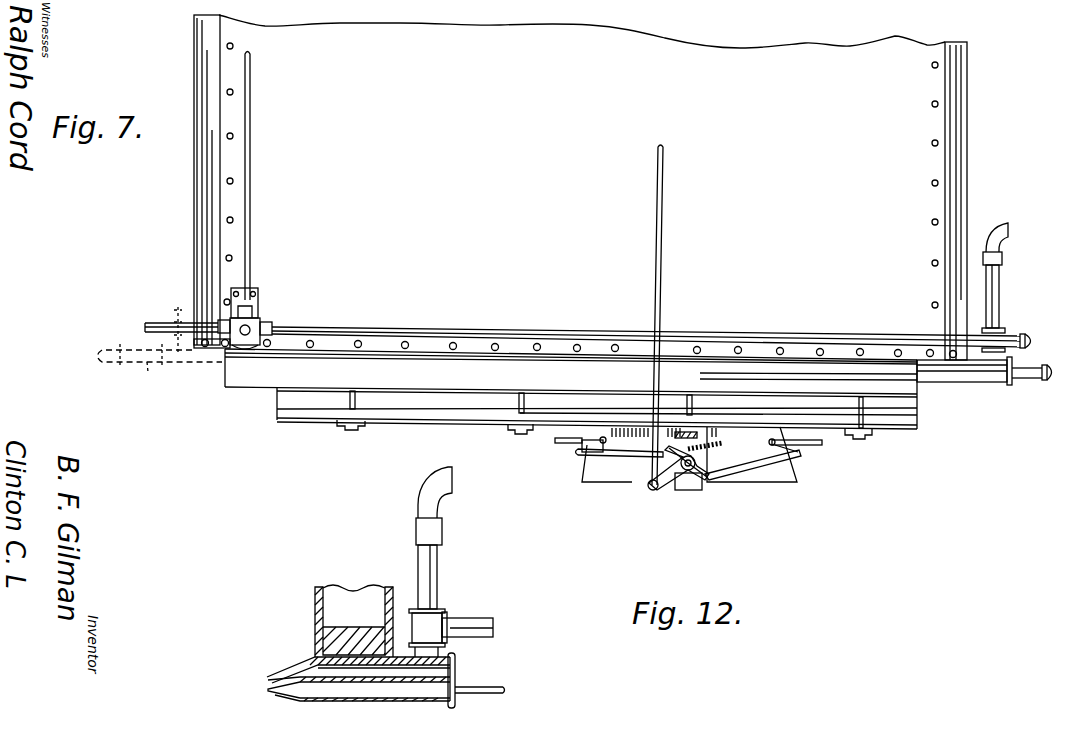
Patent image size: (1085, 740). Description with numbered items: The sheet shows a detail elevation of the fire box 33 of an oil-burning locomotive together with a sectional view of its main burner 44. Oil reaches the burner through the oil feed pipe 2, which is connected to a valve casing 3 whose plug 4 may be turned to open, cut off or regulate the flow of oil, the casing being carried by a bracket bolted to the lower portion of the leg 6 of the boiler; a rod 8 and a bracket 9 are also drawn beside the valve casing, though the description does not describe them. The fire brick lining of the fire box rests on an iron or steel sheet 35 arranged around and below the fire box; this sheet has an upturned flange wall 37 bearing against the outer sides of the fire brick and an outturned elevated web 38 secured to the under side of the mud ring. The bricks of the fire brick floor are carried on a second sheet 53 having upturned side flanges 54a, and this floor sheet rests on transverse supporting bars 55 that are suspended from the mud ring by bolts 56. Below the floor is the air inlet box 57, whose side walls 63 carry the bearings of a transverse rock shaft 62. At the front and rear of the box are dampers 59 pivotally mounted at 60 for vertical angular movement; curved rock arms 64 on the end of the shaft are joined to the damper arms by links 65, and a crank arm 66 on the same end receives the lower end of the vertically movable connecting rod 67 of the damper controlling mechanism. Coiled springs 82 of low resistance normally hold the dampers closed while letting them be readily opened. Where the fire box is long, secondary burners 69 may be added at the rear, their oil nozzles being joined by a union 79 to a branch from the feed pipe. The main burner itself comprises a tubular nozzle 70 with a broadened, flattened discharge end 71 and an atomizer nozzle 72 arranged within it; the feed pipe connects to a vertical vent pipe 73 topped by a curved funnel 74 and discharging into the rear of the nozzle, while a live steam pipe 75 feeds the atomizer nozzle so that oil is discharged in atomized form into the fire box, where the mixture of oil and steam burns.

In FIG. 7, the oil feed pipe 2 is at (158, 323).
In FIG. 12, the oil feed pipe 2 is at (486, 625).
In FIG. 7, the valve casing 3 is at (238, 342).
In FIG. 7, the plug 4 is at (264, 320).
In FIG. 7, the leg of the locomotive boiler 6 is at (249, 180).
In FIG. 7, the rod 8 is at (252, 118).
In FIG. 7, the bracket 9 is at (258, 302).
In FIG. 7, the fire box 33 is at (925, 127).
In FIG. 7, the sheet 35 is at (468, 390).
In FIG. 7, the upturned flange wall 37 is at (920, 395).
In FIG. 7, the outturned elevated portion or web 38 is at (548, 356).
In FIG. 7, the main burner 44 is at (975, 385).
In FIG. 7, the sheet 53 is at (312, 422).
In FIG. 7, the upturned side flanges 54a is at (416, 421).
In FIG. 7, the supporting bars 55 is at (508, 432).
In FIG. 7, the bolts 56 is at (357, 405).
In FIG. 7, the air inlet box 57 is at (588, 478).
In FIG. 7, the dampers 59 is at (560, 444).
In FIG. 7, the pivots 60 is at (603, 444).
In FIG. 7, the rock shaft 62 is at (710, 462).
In FIG. 7, the side walls 63 is at (757, 480).
In FIG. 7, the rock arms 64 is at (670, 448).
In FIG. 7, the links 65 is at (634, 458).
In FIG. 7, the crank arm 66 is at (657, 490).
In FIG. 7, the connecting rod 67 is at (663, 225).
In FIG. 7, the secondary burners 69 is at (102, 366).
In FIG. 12, the tubular nozzle 70 is at (452, 702).
In FIG. 12, the discharge end 71 is at (305, 665).
In FIG. 12, the atomizer nozzle 72 is at (325, 697).
In FIG. 12, the vent pipe 73 is at (440, 562).
In FIG. 7, the curved funnel 74 is at (1010, 233).
In FIG. 12, the curved funnel 74 is at (453, 488).
In FIG. 7, the live steam pipe 75 is at (1030, 382).
In FIG. 12, the live steam pipe 75 is at (500, 686).
In FIG. 7, the union 79 is at (148, 372).
In FIG. 7, the coiled springs 82 is at (710, 442).